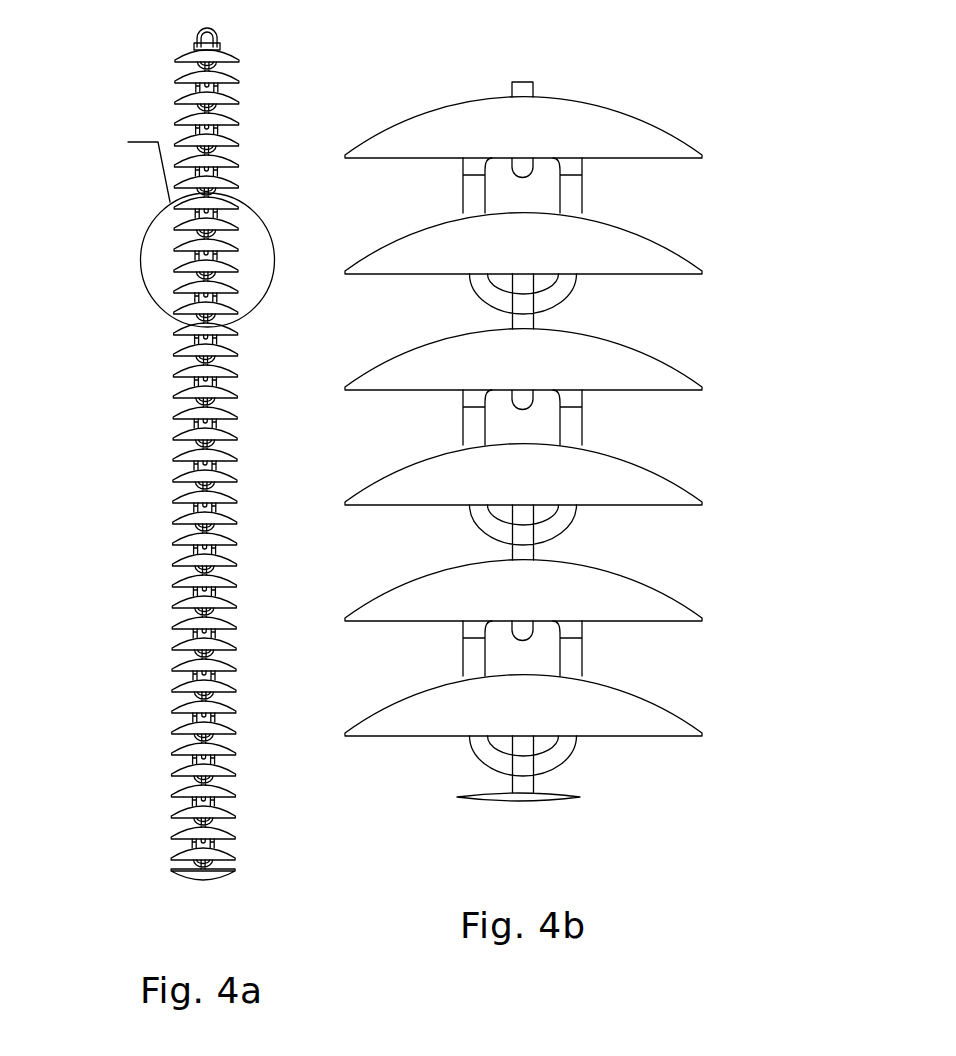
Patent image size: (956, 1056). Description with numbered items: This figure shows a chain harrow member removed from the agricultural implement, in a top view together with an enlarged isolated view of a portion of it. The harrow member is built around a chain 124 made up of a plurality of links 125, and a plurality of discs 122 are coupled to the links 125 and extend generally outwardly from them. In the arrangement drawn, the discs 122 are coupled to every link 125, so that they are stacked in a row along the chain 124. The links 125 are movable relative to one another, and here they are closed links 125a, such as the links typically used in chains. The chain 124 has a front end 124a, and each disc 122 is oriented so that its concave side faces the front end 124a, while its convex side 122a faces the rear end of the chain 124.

In FIG. 4A, the disc 122 is at (205, 455).
In FIG. 4B, the disc 122 is at (523, 351).
In FIG. 4A, the convex side 122a is at (203, 874).
In FIG. 4B, the convex side 122a is at (523, 738).
In FIG. 4A, the chain 124 is at (171, 454).
In FIG. 4B, the chain 124 is at (574, 441).
In FIG. 4A, the front end 124a is at (207, 39).
In FIG. 4A, the link 125 is at (205, 465).
In FIG. 4B, the link 125 is at (522, 417).
In FIG. 4A, the closed link 125a is at (205, 465).
In FIG. 4B, the closed link 125a is at (523, 525).